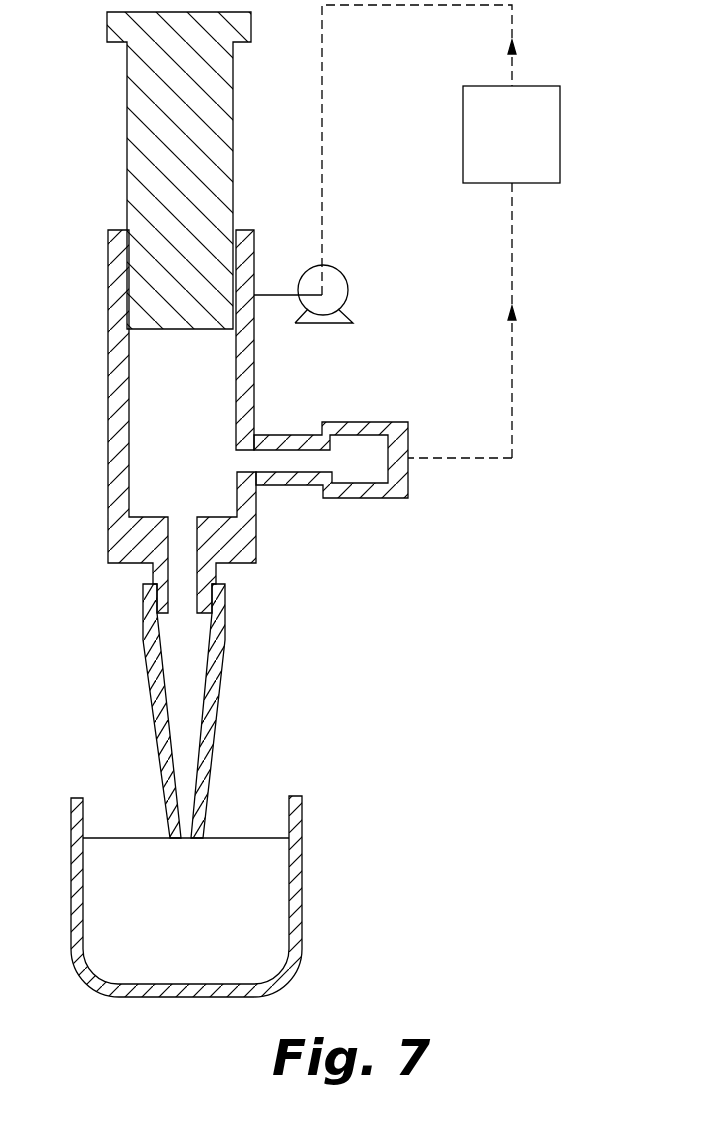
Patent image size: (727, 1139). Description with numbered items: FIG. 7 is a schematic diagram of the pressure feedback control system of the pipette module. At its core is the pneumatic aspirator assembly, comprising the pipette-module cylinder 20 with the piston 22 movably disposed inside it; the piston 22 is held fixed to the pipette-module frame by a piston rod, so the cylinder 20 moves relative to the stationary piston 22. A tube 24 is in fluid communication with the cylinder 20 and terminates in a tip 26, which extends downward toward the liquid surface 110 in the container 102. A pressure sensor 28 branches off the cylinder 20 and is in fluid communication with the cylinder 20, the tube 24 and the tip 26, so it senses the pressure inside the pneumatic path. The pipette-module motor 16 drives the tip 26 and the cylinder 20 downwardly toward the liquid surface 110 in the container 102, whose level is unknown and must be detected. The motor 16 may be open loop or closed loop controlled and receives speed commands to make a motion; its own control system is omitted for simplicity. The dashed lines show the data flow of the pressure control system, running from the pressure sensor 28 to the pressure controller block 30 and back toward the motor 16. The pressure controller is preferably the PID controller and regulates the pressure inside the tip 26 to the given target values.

The pipette-module motor 16 is at (348, 290).
The pipette-module cylinder 20 is at (110, 457).
The piston 22 is at (127, 123).
The tube 24 is at (153, 573).
The tip 26 is at (217, 697).
The pressure sensor 28 is at (408, 443).
The controller 30 is at (560, 135).
The container 102 is at (302, 821).
The liquid surface 110 is at (128, 838).